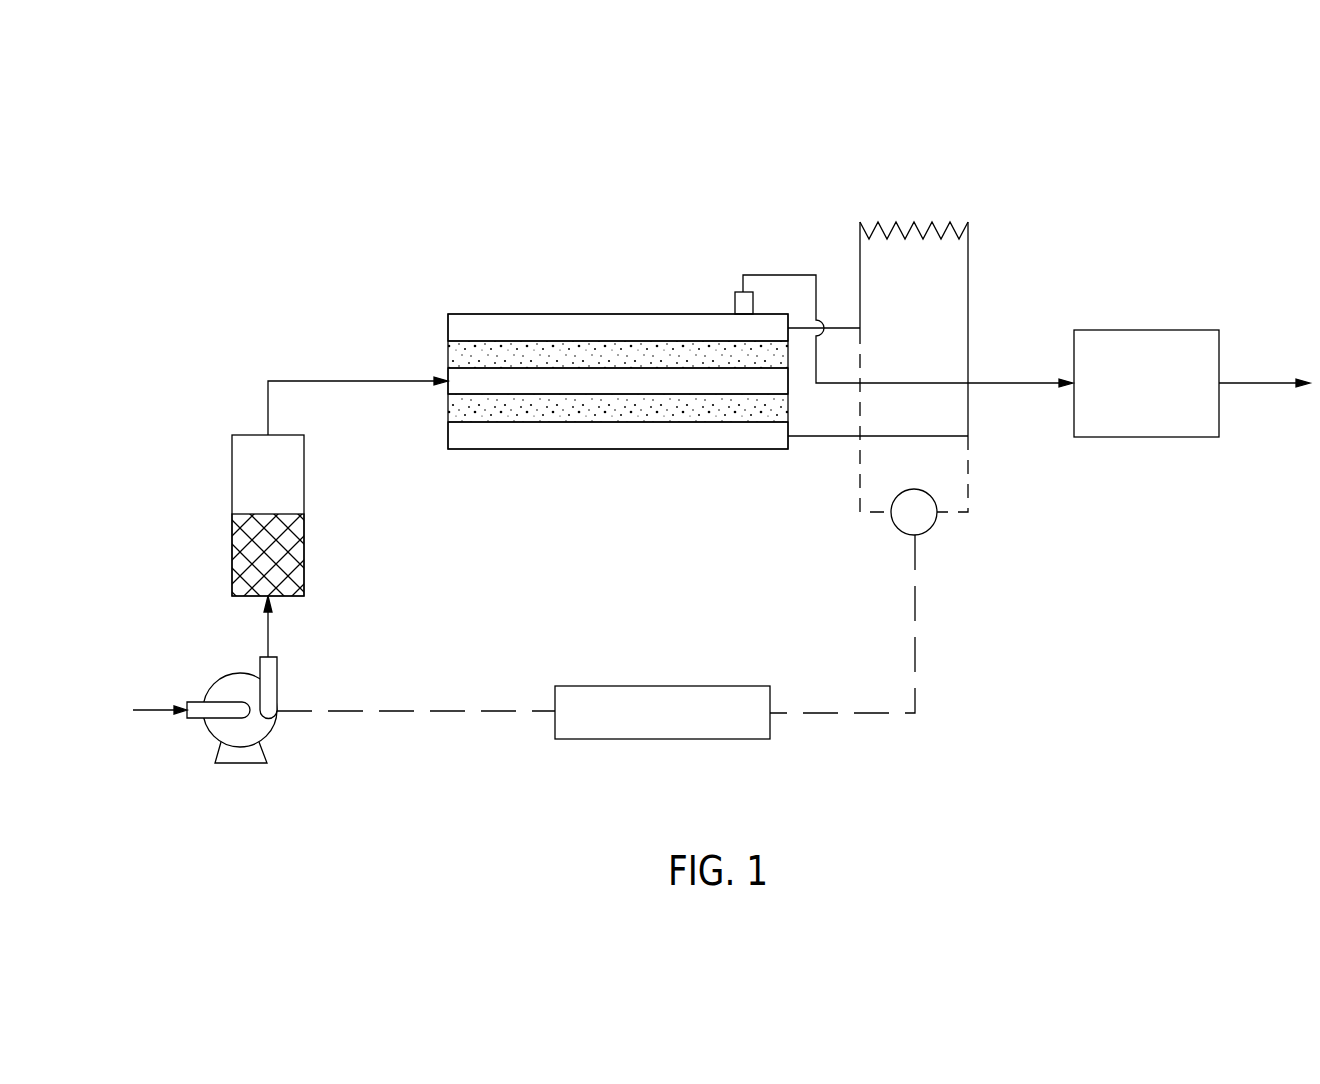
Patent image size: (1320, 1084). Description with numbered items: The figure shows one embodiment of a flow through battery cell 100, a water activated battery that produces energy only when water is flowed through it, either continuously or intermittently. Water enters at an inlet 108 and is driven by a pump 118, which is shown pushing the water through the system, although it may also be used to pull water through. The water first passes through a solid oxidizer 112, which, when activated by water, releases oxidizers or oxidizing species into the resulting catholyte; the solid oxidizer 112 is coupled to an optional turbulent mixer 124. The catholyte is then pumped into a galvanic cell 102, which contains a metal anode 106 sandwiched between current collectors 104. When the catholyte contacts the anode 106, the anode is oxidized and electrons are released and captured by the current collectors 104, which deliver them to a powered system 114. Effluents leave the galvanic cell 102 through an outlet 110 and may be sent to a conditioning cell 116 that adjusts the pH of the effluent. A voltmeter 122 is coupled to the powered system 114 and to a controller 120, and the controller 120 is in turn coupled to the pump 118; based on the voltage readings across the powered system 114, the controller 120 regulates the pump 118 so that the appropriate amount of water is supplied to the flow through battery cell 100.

The flow through battery cell 100 is at (1217, 160).
The galvanic cell 102 is at (570, 314).
The current collectors 104 is at (448, 323).
The anode 106 is at (465, 380).
The inlet 108 is at (178, 708).
The outlet 110 is at (734, 294).
The solid oxidizer 112 is at (304, 562).
The powered system 114 is at (968, 232).
The conditioning cell 116 is at (1148, 330).
The pump 118 is at (277, 683).
The controller 120 is at (655, 686).
The voltmeter 122 is at (933, 525).
The turbulent mixer 124 is at (304, 482).